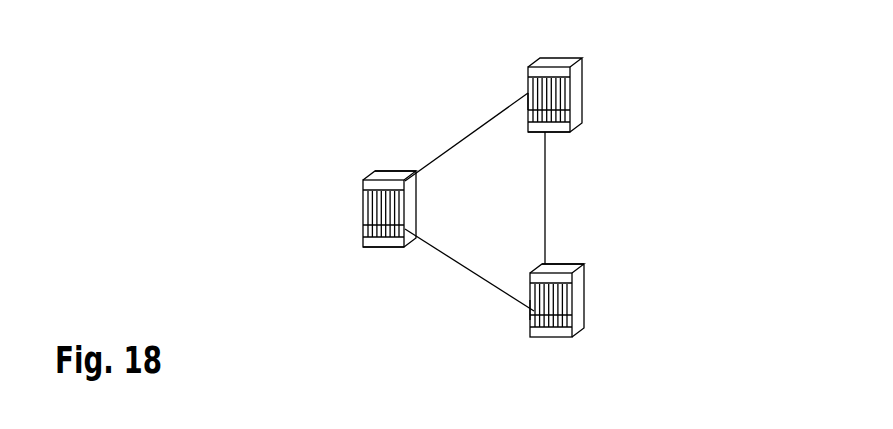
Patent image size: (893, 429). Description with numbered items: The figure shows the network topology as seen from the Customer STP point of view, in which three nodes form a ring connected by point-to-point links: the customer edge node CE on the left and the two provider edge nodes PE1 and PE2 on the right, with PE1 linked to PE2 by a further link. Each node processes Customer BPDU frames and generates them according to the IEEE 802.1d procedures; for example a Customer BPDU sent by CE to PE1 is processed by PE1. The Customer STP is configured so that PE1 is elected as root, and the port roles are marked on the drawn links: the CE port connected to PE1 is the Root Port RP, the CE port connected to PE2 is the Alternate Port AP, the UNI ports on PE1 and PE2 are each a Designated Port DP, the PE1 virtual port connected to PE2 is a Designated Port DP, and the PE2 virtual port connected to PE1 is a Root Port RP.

The customer edge node CE is at (364, 213).
The Alternate Port AP is at (384, 248).
The Root Port RP is at (388, 182).
The Designated Port DP is at (528, 93).
The provider edge node PE1 is at (576, 92).
The provider edge node PE2 is at (578, 306).